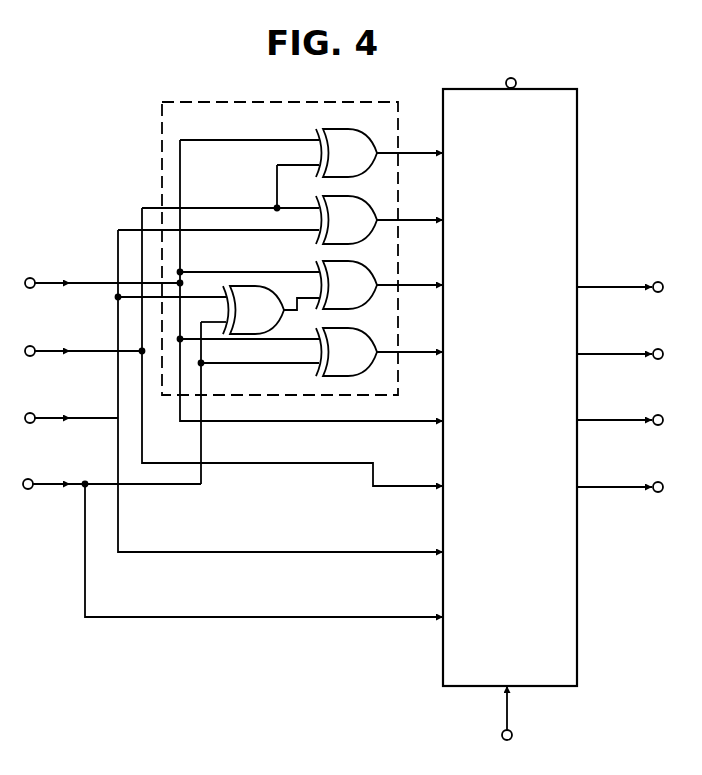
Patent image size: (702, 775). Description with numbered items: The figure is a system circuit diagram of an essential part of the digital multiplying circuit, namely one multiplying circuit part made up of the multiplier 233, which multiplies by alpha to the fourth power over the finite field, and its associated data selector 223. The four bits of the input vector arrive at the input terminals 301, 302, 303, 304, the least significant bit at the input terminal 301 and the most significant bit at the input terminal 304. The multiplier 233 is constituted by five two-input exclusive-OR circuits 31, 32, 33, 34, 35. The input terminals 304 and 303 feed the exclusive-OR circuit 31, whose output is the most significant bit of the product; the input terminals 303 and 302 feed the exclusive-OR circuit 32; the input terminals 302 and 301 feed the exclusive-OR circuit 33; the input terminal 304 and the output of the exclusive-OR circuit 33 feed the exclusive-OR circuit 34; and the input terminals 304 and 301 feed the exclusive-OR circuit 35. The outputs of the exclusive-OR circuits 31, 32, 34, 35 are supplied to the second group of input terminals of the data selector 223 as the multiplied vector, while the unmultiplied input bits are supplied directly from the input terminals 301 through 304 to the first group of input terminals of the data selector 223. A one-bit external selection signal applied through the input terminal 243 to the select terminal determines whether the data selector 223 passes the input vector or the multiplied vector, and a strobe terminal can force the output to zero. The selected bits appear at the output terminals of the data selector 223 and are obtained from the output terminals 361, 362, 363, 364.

The data selector 223 is at (553, 86).
The multiplier 233 is at (316, 101).
The input terminal 243 is at (512, 735).
The exclusive-OR circuit 31 is at (348, 119).
The exclusive-OR circuit 32 is at (348, 187).
The exclusive-OR circuit 33 is at (265, 278).
The exclusive-OR circuit 34 is at (348, 252).
The exclusive-OR circuit 35 is at (350, 322).
The input terminal 301 is at (30, 478).
The input terminal 302 is at (32, 412).
The input terminal 303 is at (32, 345).
The input terminal 304 is at (32, 277).
The output terminal 361 is at (660, 481).
The output terminal 362 is at (660, 414).
The output terminal 363 is at (660, 348).
The output terminal 364 is at (664, 273).